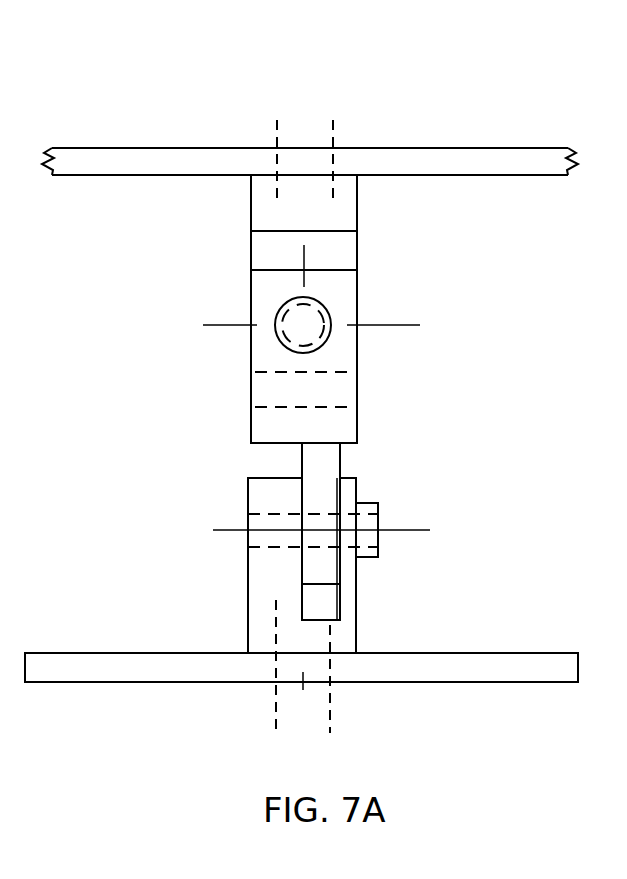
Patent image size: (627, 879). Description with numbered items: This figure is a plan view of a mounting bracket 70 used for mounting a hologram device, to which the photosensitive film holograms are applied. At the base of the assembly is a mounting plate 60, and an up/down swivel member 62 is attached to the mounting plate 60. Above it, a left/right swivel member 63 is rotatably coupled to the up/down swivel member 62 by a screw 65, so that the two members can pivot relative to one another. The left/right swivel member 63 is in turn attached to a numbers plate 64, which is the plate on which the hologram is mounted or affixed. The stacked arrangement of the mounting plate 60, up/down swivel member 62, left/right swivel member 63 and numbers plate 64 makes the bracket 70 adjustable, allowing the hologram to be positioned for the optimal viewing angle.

The mounting bracket 70 is at (483, 90).
The numbers plate 64 is at (194, 148).
The left/right swivel member 63 is at (253, 292).
The screw 65 is at (325, 312).
The up/down swivel member 62 is at (248, 568).
The mounting plate 60 is at (178, 686).